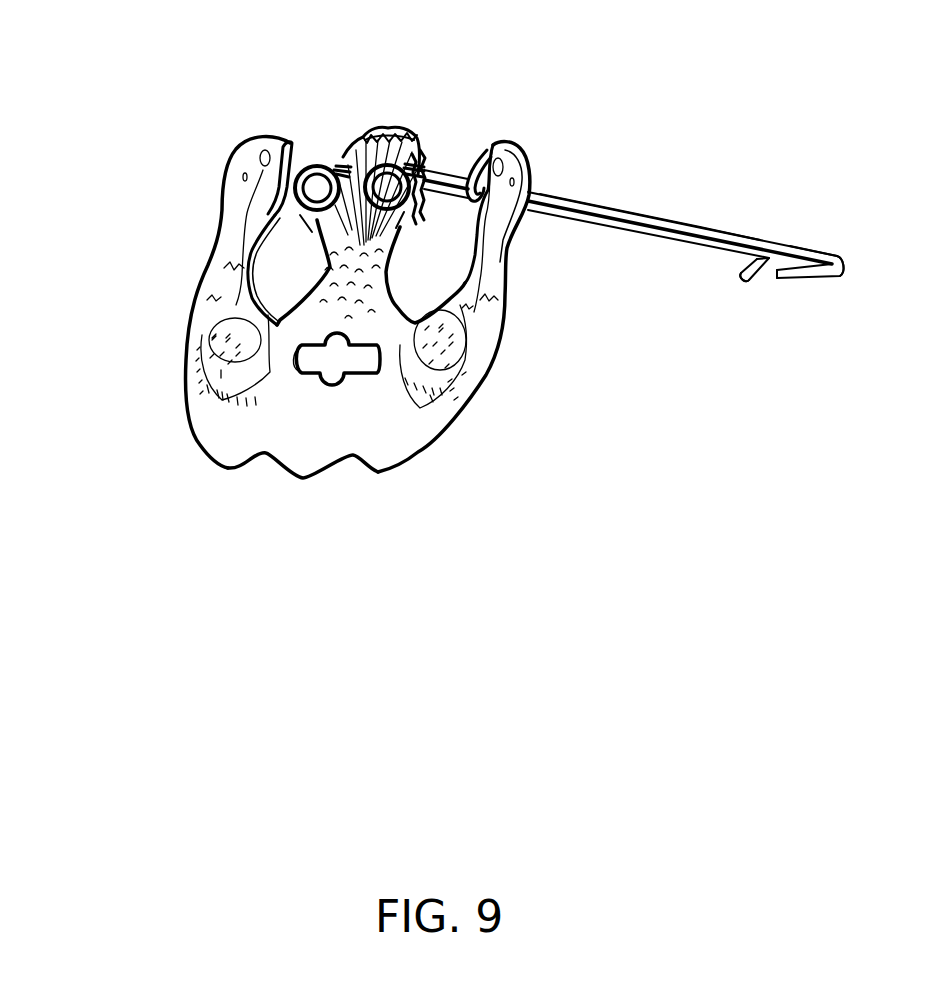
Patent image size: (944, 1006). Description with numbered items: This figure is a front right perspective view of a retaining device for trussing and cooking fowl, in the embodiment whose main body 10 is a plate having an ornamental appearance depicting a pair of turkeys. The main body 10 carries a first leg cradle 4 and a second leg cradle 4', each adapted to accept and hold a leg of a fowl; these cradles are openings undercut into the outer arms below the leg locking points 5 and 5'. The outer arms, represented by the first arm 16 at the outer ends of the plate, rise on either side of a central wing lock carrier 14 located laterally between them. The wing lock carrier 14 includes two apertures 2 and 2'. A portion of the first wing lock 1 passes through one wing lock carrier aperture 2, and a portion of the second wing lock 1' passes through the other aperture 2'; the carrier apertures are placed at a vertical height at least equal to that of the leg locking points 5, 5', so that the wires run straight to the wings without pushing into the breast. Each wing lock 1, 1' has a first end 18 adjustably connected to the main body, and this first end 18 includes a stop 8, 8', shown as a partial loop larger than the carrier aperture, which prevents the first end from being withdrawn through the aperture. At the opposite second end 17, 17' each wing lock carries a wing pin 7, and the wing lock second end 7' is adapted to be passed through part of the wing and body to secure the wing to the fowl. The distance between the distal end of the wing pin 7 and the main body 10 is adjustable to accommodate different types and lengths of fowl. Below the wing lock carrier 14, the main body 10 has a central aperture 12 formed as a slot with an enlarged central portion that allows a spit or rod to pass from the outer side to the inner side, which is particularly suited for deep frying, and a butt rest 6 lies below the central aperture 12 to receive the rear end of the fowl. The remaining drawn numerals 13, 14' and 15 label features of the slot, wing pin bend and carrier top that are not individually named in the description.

The first wing lock 1 is at (634, 308).
The second wing lock 1' is at (620, 133).
The wing lock carrier aperture 2 is at (371, 163).
The wing lock carrier aperture 2' is at (459, 113).
The first leg cradle 4 is at (177, 354).
The second leg cradle 4' is at (485, 360).
The leg locking point 5 is at (188, 178).
The leg locking point 5' is at (505, 122).
The butt rest 6 is at (289, 488).
The wing pin 7 is at (728, 387).
The wing lock second end 7' is at (800, 385).
The stop 8 is at (305, 127).
The stop 8' is at (406, 126).
The main body 10 is at (183, 429).
The central aperture 12 is at (339, 359).
The slot end 13 is at (300, 369).
The wing lock carrier 14 is at (759, 352).
The hook bend end 14' is at (855, 351).
The crest top 15 is at (390, 127).
The first arm 16 is at (205, 250).
The second end of wing lock 17 is at (701, 337).
The second end of wing lock 17' is at (815, 148).
The first end of wing lock 18 is at (304, 221).